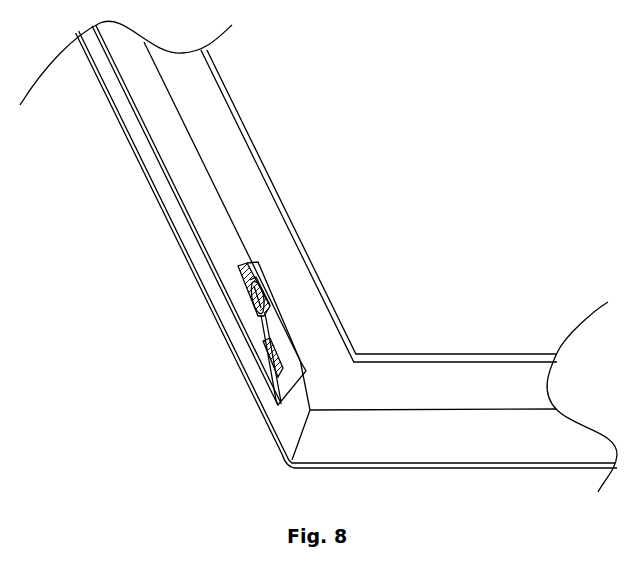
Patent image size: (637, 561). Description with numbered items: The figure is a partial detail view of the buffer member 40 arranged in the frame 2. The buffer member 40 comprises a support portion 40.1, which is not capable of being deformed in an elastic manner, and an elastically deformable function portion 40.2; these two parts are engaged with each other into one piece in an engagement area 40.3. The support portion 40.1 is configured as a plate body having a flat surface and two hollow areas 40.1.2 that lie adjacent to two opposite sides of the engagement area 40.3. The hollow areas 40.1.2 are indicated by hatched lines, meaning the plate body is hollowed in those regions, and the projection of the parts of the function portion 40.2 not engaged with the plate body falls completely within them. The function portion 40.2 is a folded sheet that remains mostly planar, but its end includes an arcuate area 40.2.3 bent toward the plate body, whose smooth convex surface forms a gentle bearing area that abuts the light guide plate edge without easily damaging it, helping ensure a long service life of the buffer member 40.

The frame 2 is at (365, 117).
The buffer member 40 is at (282, 215).
The support portion 40.1 is at (392, 144).
The hollow areas 40.1.2 is at (397, 174).
The function portion 40.2 is at (403, 230).
The arcuate area 40.2.3 is at (334, 317).
The engagement area 40.3 is at (398, 202).